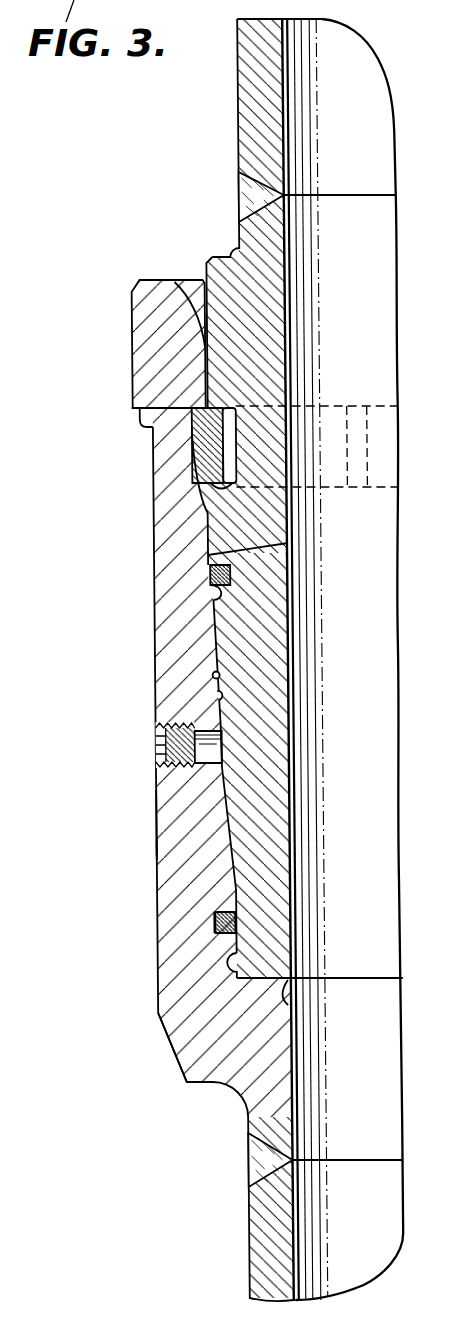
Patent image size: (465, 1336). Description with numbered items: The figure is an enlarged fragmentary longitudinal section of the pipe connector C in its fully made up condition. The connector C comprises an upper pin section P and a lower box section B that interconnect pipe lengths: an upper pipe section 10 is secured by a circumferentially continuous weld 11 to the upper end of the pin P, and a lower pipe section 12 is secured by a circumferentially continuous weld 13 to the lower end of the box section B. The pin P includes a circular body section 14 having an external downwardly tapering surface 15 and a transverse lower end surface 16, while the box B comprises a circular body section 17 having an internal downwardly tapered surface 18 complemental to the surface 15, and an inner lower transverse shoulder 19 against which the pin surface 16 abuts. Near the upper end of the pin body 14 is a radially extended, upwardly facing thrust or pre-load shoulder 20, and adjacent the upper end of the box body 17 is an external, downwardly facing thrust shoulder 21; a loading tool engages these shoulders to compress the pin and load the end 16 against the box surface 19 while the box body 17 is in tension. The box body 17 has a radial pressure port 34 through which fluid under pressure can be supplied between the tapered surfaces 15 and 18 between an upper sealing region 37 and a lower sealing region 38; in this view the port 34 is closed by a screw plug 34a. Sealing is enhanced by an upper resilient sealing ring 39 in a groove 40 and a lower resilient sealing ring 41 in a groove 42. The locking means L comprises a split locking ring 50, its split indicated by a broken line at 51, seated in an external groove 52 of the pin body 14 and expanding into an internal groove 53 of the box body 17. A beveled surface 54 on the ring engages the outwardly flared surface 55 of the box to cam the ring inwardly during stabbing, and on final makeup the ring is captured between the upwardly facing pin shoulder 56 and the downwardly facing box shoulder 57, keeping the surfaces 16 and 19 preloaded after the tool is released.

The upper pipe section 10 is at (252, 108).
The weld 11 is at (252, 194).
The lower pipe section 12 is at (250, 1262).
The weld 13 is at (250, 1157).
The pin body section 14 is at (270, 647).
The external downwardly tapering surface 15 is at (214, 679).
The lower end surface 16 is at (279, 1005).
The box body section 17 is at (158, 820).
The internal downwardly tapered surface 18 is at (212, 697).
The inner lower transverse shoulder 19 is at (258, 978).
The thrust or pre-load shoulder 20 is at (227, 250).
The thrust shoulder 21 is at (134, 410).
The radial pressure port 34 is at (205, 752).
The screw plug 34a is at (150, 760).
The upper opposed sealing region 37 is at (283, 543).
The lower opposed sealing region 38 is at (231, 888).
The upper sealing ring 39 is at (205, 573).
The groove 40 is at (206, 598).
The lower sealing ring 41 is at (208, 933).
The groove 42 is at (210, 912).
The locking element 50 is at (190, 433).
The split 51 is at (357, 448).
The external groove 52 is at (229, 427).
The internal groove 53 is at (191, 450).
The beveled surface 54 is at (191, 470).
The outwardly flared surface 55 is at (186, 300).
The lower horizontal shoulder 56 is at (194, 492).
The upper horizontal shoulder 57 is at (209, 408).
The locking means L is at (182, 407).
The pin section P is at (207, 633).
The box section B is at (153, 848).
The pipe connector C is at (121, 1041).